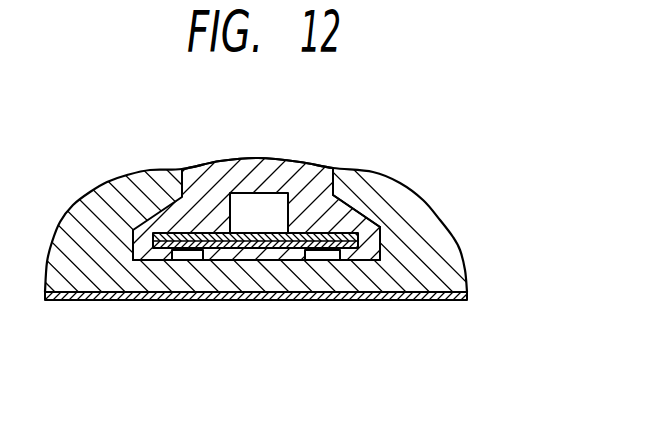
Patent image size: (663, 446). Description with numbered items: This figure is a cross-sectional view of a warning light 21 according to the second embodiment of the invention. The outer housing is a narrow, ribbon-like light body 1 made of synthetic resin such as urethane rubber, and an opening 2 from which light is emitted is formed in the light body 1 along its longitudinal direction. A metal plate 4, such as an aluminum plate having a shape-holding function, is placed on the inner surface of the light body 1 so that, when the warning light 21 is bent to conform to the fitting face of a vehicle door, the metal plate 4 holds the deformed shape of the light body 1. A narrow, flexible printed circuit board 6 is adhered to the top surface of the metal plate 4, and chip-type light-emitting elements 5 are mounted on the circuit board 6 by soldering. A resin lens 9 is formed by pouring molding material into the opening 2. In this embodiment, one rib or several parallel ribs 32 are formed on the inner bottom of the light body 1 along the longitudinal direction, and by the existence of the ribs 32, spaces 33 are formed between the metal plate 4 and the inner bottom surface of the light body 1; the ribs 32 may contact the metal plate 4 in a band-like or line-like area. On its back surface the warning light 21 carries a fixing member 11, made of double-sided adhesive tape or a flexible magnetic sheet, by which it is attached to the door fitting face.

The light body 1 is at (432, 212).
The opening 2 is at (322, 180).
The metal plate 4 is at (340, 256).
The chip-type light-emitting element 5 is at (242, 203).
The flexible printed circuit board 6 is at (347, 212).
The resin lens 9 is at (269, 162).
The fixing member 11 is at (417, 295).
The warning light 21 is at (377, 123).
The rib 32 is at (276, 251).
The space 33 is at (182, 254).